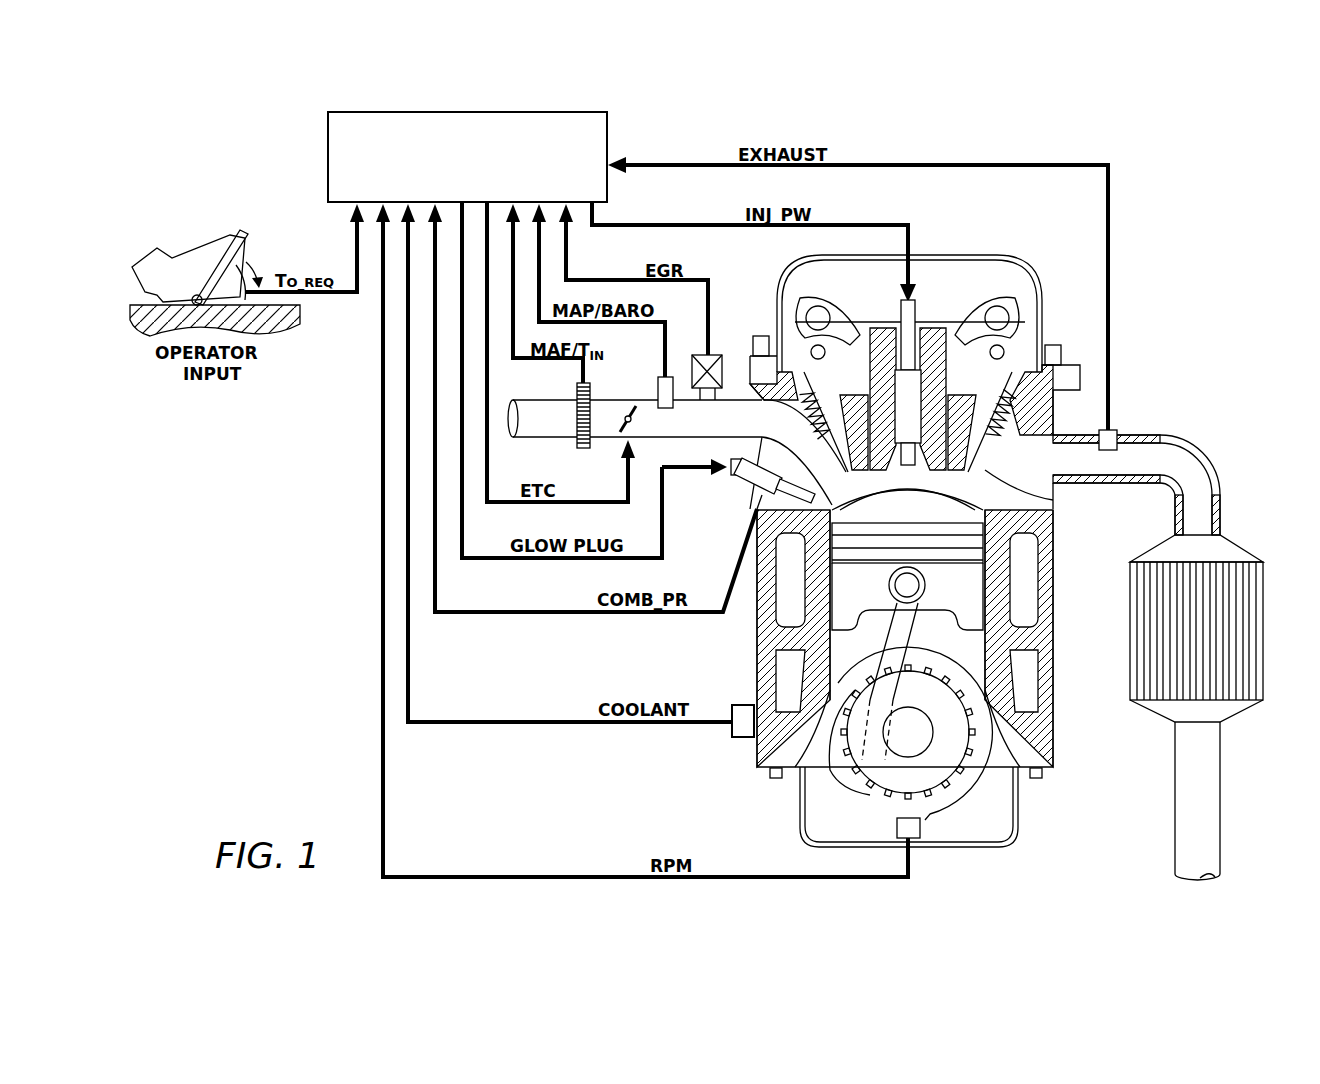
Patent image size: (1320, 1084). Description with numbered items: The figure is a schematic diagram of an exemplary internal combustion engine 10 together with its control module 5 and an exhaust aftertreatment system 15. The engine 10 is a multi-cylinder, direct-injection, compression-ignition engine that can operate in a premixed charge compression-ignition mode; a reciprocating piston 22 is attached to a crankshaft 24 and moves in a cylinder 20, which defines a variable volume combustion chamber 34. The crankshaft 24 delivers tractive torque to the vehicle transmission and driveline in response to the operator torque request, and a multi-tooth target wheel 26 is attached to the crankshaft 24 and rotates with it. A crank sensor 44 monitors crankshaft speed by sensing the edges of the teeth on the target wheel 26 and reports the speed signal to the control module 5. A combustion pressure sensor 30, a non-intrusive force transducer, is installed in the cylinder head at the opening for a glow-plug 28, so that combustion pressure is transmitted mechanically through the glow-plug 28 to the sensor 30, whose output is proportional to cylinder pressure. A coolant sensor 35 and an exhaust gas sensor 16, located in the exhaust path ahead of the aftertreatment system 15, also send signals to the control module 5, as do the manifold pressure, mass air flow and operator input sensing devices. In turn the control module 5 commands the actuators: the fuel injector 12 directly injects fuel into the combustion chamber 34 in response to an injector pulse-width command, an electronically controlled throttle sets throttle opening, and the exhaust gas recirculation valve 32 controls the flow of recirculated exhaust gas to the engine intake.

The control module 5 is at (588, 118).
The internal combustion engine 10 is at (1022, 262).
The fuel injector 12 is at (912, 313).
The exhaust aftertreatment system 15 is at (1238, 553).
The exhaust gas sensor 16 is at (1115, 430).
The cylinder 20 is at (1045, 500).
The piston 22 is at (876, 588).
The crankshaft 24 is at (983, 735).
The multi-tooth target wheel 26 is at (950, 748).
The glow-plug 28 is at (688, 470).
The combustion pressure sensor 30 is at (688, 614).
The exhaust gas recirculation valve 32 is at (713, 355).
The combustion chamber 34 is at (918, 512).
The coolant sensor 35 is at (692, 725).
The crank sensor 44 is at (915, 828).